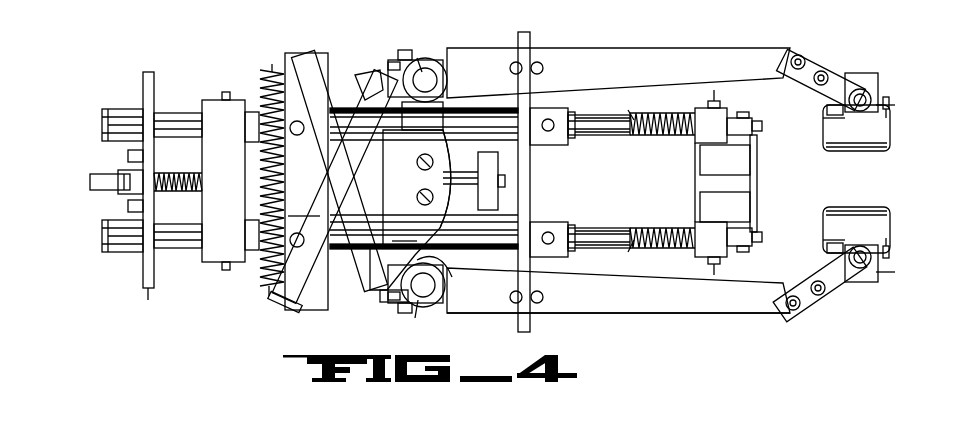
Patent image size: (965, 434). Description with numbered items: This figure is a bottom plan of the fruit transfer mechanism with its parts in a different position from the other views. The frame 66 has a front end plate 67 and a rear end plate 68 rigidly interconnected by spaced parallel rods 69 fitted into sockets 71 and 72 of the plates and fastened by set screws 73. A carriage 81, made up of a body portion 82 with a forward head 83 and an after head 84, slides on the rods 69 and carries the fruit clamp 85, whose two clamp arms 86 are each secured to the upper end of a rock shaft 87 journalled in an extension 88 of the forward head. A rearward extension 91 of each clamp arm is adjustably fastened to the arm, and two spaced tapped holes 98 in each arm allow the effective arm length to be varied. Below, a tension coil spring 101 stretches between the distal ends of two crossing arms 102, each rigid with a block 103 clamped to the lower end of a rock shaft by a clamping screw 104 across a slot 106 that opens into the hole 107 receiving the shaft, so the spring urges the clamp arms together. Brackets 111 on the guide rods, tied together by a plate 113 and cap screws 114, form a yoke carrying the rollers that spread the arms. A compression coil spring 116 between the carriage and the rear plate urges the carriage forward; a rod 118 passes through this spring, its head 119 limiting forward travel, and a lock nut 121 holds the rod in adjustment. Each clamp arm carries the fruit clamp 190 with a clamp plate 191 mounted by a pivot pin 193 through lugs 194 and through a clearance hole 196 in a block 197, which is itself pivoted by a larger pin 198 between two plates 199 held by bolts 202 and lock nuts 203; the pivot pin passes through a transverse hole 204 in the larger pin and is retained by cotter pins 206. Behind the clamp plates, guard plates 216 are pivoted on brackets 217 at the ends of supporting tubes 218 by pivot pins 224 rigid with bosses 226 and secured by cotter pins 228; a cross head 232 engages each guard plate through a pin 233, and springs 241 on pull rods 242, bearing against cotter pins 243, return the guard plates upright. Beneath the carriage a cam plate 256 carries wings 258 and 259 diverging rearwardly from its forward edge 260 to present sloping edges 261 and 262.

The frame 66 is at (141, 100).
The front end plate 67 is at (530, 322).
The rear end plate 68 is at (149, 304).
The rods 69 is at (168, 118).
The sockets 71 is at (590, 140).
The sockets 72 is at (122, 125).
The set screws 73 is at (550, 233).
The carriage 81 is at (205, 154).
The body portion 82 is at (365, 210).
The forward head 83 is at (432, 55).
The after head 84 is at (212, 213).
The fruit clamp 85 is at (735, 316).
The clamp arms 86 is at (688, 52).
The rock shaft 87 is at (428, 78).
The extension 88 is at (446, 90).
The rearward extension 91 is at (252, 78).
The tapped holes 98 is at (543, 67).
The coil spring 101 is at (262, 174).
The arms 102 is at (318, 160).
The block 103 is at (382, 88).
The clamping screw 104 is at (400, 52).
The slot 106 is at (390, 66).
The hole 107 is at (420, 60).
The bracket 111 is at (312, 55).
The plate 113 is at (302, 208).
The cap screws 114 is at (297, 135).
The coil spring 116 is at (185, 192).
The rod 118 is at (462, 184).
The head 119 is at (478, 156).
The lock nut 121 is at (126, 190).
The fruit clamp 190 is at (895, 140).
The clamp plate 191 is at (862, 222).
The pivot pin 193 is at (890, 106).
The lugs 194 is at (764, 126).
The clearance hole 196 is at (855, 88).
The block 197 is at (862, 85).
The pin 198 is at (885, 100).
The plates 199 is at (799, 54).
The bolts 202 is at (826, 328).
The lock nuts 203 is at (825, 70).
The transverse hole 204 is at (872, 92).
The cotter pin 206 is at (890, 116).
The guard plates 216 is at (757, 165).
The bracket 217 is at (700, 110).
The supporting tube 218 is at (618, 212).
The pivot pin 224 is at (714, 92).
The boss 226 is at (710, 164).
The cotter pin 228 is at (738, 268).
The cross head 232 is at (742, 130).
The pin 233 is at (750, 114).
The springs 241 is at (672, 136).
The pull rod 242 is at (625, 120).
The cotter pin 243 is at (632, 112).
The cam plate 256 is at (410, 210).
The wing 258 is at (404, 234).
The wing 259 is at (438, 134).
The forward edge 260 is at (480, 200).
The sloping edge 261 is at (445, 250).
The sloping edge 262 is at (422, 116).